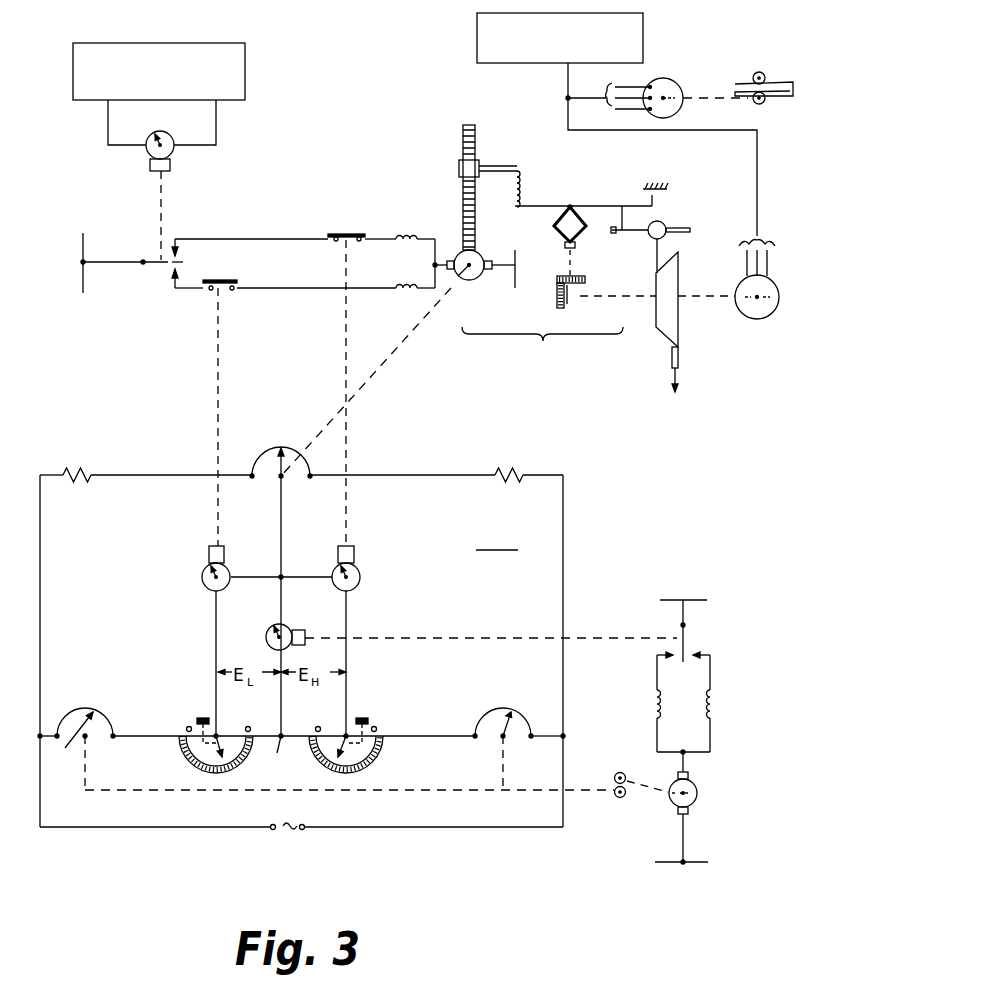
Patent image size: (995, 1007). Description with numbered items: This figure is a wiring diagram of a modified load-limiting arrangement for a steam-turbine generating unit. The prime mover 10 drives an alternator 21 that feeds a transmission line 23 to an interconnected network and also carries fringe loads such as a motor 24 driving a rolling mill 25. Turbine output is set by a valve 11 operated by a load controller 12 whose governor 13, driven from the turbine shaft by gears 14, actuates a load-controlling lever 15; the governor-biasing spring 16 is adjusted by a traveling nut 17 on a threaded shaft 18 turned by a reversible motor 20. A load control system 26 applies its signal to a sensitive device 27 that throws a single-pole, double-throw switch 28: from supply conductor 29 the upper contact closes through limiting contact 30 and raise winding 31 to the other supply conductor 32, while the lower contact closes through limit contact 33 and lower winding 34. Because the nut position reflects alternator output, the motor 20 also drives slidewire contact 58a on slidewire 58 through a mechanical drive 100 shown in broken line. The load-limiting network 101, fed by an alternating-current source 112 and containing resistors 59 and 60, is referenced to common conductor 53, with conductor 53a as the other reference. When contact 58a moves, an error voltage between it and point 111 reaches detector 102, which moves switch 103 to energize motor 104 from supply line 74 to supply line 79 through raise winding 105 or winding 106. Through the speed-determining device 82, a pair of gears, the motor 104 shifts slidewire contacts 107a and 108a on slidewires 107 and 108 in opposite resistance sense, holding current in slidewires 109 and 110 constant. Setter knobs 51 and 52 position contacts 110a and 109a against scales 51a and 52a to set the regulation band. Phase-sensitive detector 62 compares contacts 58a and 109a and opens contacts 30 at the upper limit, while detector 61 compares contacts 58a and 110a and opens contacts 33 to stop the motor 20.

The prime mover 10 is at (678, 330).
The valve 11 is at (666, 224).
The load controller 12 is at (553, 371).
The governor 13 is at (582, 238).
The gears 14 is at (570, 288).
The load-controlling lever 15 is at (590, 205).
The governor-biasing spring 16 is at (522, 192).
The traveling nut 17 is at (459, 165).
The threaded shaft 18 is at (463, 203).
The reversible motor 20 is at (474, 280).
The alternator 21 is at (758, 319).
The transmission line 23 is at (740, 133).
The motor 24 is at (674, 82).
The rolling mill 25 is at (789, 57).
The load control system 26 is at (78, 60).
The sensitive device 27 is at (171, 134).
The single-pole, double-throw switch 28 is at (167, 265).
The supply conductor 29 is at (82, 243).
The limiting contact 30 is at (343, 233).
The raise motor winding 31 is at (402, 233).
The supply conductor 32 is at (516, 260).
The limit contact 33 is at (222, 280).
The lower motor winding 34 is at (403, 292).
The setter knob 51 is at (200, 715).
The scale 51a is at (205, 770).
The setter knob 52 is at (362, 715).
The scale 52a is at (357, 770).
The common conductor 53 is at (42, 604).
The conductor 53a is at (565, 536).
The slidewire 58 is at (271, 452).
The slidewire contact 58a is at (280, 468).
The resistor 59 is at (70, 467).
The resistor 60 is at (503, 467).
The detector 61 is at (202, 577).
The detector 62 is at (361, 578).
The supply line 74 is at (697, 598).
The supply line 79 is at (690, 866).
The speed-determining device 82 is at (617, 800).
The mechanical drive 100 is at (374, 372).
The load-limiting network 101 is at (501, 536).
The detector 102 is at (268, 633).
The single-pole, double-throw switch 103 is at (690, 649).
The motor 104 is at (698, 796).
The raise winding 105 is at (716, 712).
The winding 106 is at (655, 712).
The slidewire 107 is at (490, 720).
The slidewire contact 107a is at (510, 738).
The slidewire 108 is at (100, 718).
The slidewire contact 108a is at (66, 742).
The slidewire 109 is at (372, 752).
The slidewire contact 109a is at (336, 750).
The slidewire 110 is at (190, 749).
The slidewire contact 110a is at (225, 748).
The point 111 is at (288, 753).
The alternating-current source 112 is at (293, 834).